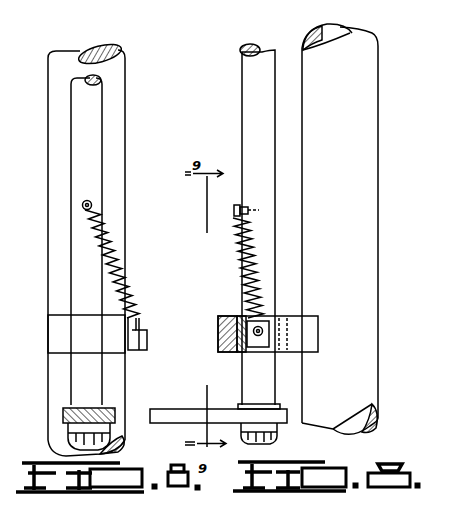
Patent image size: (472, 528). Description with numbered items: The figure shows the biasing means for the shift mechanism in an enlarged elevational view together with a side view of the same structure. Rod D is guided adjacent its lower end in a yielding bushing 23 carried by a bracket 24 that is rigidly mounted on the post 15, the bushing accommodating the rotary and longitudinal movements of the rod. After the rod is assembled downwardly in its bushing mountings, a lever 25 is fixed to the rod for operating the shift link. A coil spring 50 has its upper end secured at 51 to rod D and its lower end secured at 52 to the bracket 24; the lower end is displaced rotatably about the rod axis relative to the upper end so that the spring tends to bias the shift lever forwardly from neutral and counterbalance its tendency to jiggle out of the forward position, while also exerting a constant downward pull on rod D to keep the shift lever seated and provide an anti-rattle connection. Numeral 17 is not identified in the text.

In FIG. 8, the post 15 is at (112, 72).
In FIG. 9, the post 15 is at (362, 200).
In FIG. 8, the inner rod 17 is at (82, 115).
In FIG. 9, the inner rod 17 is at (242, 92).
In FIG. 9, the yielding bushing 23 is at (234, 316).
In FIG. 8, the bracket 24 is at (55, 340).
In FIG. 9, the bracket 24 is at (312, 320).
In FIG. 8, the lever 25 is at (108, 435).
In FIG. 9, the lever 25 is at (180, 410).
In FIG. 8, the coil spring 50 is at (124, 278).
In FIG. 9, the coil spring 50 is at (250, 260).
In FIG. 8, the upper end securement of spring 51 is at (91, 202).
In FIG. 9, the upper end securement of spring 51 is at (237, 206).
In FIG. 8, the lower end securement of spring 52 is at (141, 330).
In FIG. 9, the lower end securement of spring 52 is at (254, 342).